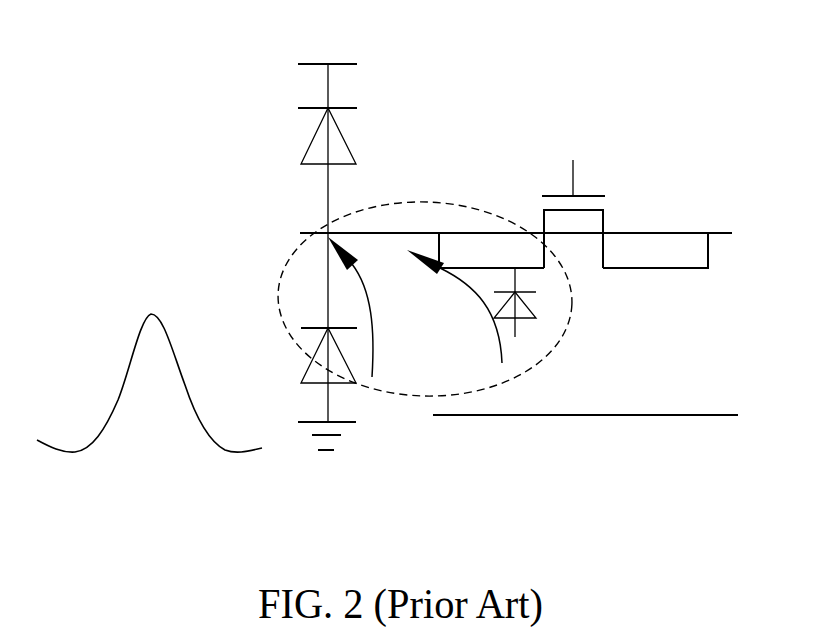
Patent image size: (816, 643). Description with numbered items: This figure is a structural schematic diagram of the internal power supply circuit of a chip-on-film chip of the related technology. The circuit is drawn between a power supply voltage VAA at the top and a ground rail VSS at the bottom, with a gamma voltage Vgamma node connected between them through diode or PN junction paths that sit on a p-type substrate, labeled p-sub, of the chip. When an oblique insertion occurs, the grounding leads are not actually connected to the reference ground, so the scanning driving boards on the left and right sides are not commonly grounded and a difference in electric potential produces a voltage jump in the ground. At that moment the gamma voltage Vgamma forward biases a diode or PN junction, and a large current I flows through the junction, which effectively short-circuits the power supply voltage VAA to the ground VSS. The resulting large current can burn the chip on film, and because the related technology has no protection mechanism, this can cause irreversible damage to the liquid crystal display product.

The power supply voltage VAA is at (332, 64).
The gamma voltage Vgamma is at (446, 234).
The ground / negative supply VSS is at (313, 442).
The injected current I is at (364, 307).
The p-type substrate p-sub is at (585, 389).